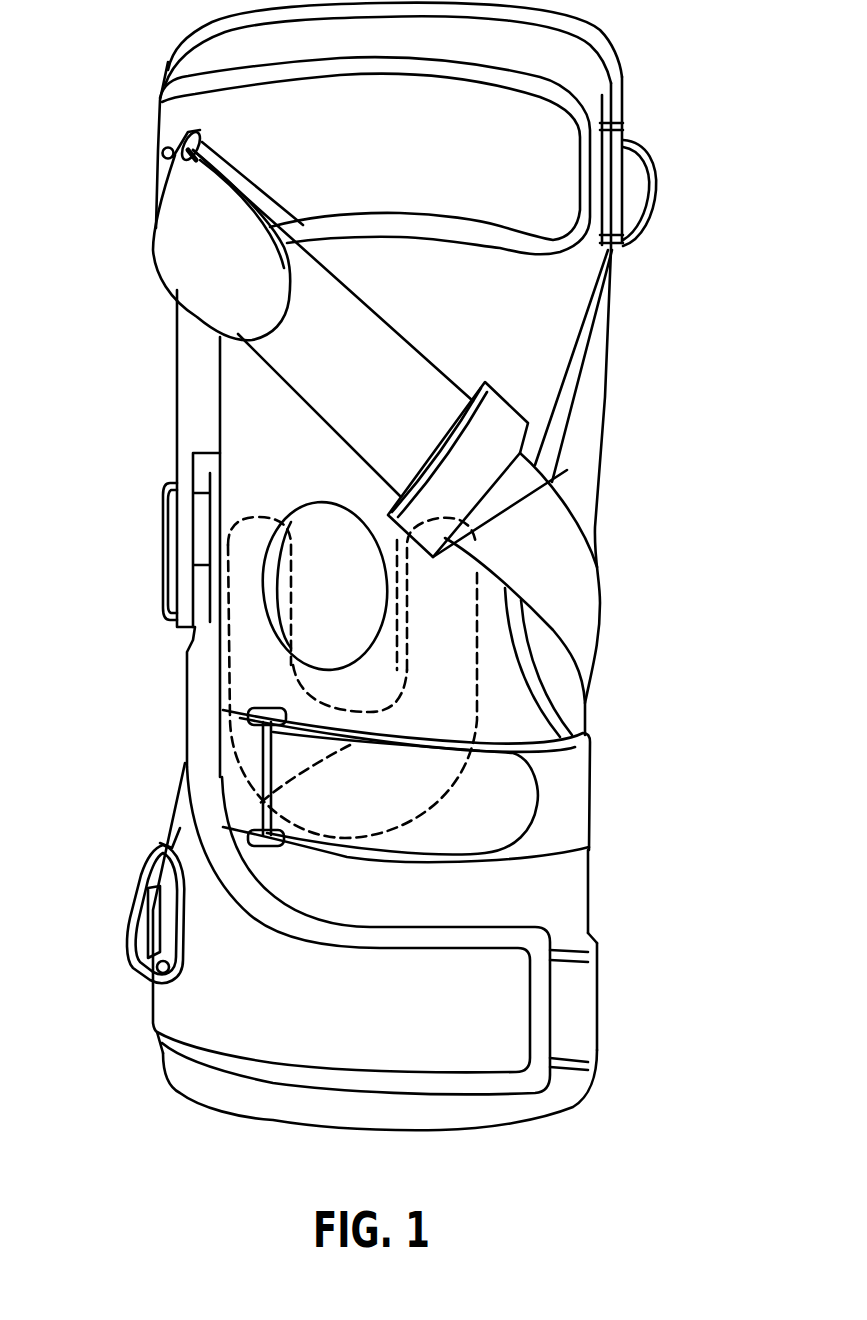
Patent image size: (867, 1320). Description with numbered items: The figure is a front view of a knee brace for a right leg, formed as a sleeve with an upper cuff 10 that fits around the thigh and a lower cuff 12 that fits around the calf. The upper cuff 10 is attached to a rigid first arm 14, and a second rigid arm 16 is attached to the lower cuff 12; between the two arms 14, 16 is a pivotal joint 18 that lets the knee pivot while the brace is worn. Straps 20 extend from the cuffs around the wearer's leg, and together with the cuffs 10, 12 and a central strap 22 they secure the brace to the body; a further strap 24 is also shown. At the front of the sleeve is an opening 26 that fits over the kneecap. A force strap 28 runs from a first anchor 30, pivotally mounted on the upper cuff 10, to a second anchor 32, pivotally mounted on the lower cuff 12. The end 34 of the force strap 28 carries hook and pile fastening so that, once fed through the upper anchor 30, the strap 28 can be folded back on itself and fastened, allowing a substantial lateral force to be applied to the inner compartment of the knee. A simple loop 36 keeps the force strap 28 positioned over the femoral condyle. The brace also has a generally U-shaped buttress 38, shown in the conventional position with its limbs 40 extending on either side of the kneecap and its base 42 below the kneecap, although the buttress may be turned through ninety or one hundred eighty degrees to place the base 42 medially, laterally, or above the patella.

The upper cuff 10 is at (548, 122).
The lower cuff 12 is at (493, 1033).
The rigid first arm 14 is at (190, 358).
The second rigid arm 16 is at (197, 743).
The pivotal joint 18 is at (165, 543).
The straps 20 is at (634, 177).
The central strap 22 is at (570, 797).
The strap 24 is at (587, 264).
The opening 26 is at (323, 620).
The force strap 28 is at (573, 586).
The first anchor 30 is at (162, 153).
The second anchor 32 is at (158, 932).
The end of force strap 34 is at (188, 247).
The loop 36 is at (500, 432).
The buttress 38 is at (448, 645).
The limbs of buttress 40 is at (253, 575).
The base of buttress 42 is at (240, 812).